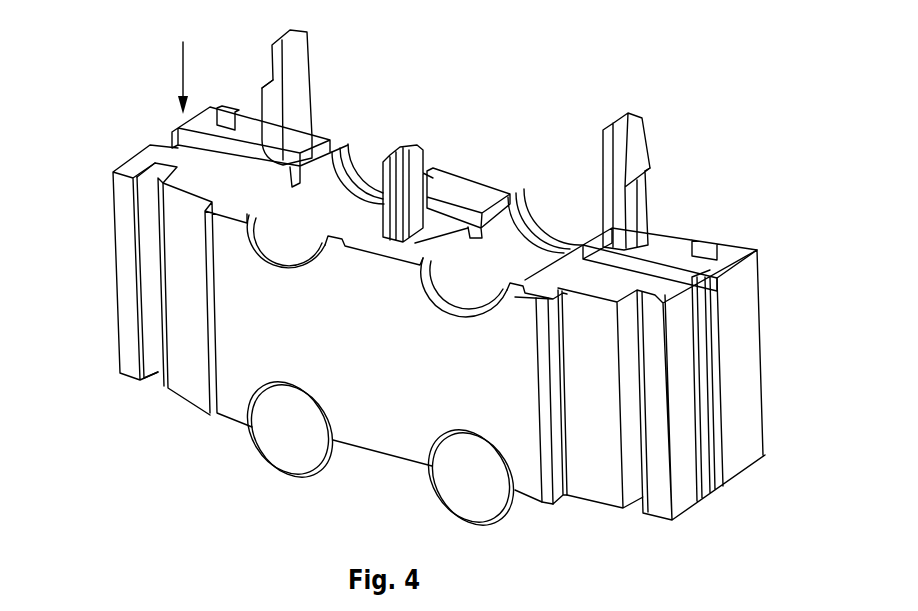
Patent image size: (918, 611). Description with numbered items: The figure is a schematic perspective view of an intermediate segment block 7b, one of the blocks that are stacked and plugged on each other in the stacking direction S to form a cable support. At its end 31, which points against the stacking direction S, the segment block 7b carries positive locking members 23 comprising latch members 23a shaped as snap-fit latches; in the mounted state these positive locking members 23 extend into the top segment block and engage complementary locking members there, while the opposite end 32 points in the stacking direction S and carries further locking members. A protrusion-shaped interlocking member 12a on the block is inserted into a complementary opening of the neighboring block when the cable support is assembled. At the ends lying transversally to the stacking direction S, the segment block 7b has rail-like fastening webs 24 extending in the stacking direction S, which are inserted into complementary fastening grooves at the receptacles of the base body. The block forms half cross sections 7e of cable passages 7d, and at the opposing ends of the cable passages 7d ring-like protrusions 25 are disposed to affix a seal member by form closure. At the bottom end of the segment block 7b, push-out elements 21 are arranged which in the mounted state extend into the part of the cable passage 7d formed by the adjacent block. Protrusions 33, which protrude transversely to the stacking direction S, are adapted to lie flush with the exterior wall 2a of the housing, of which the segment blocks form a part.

The exterior wall 2a is at (374, 436).
The intermediate segment block 7b is at (507, 147).
The cable passage 7d is at (292, 246).
The half cross section 7e is at (335, 196).
The interlocking member 12a is at (408, 163).
The push-out element 21 is at (278, 476).
The positive locking member 23 is at (298, 52).
The latch member 23a is at (272, 78).
The fastening web 24 is at (130, 167).
The ring-like protrusion 25 is at (306, 278).
The end 31 is at (189, 172).
The end 32 is at (125, 386).
The protrusion 33 is at (560, 488).
The stacking direction S is at (182, 72).